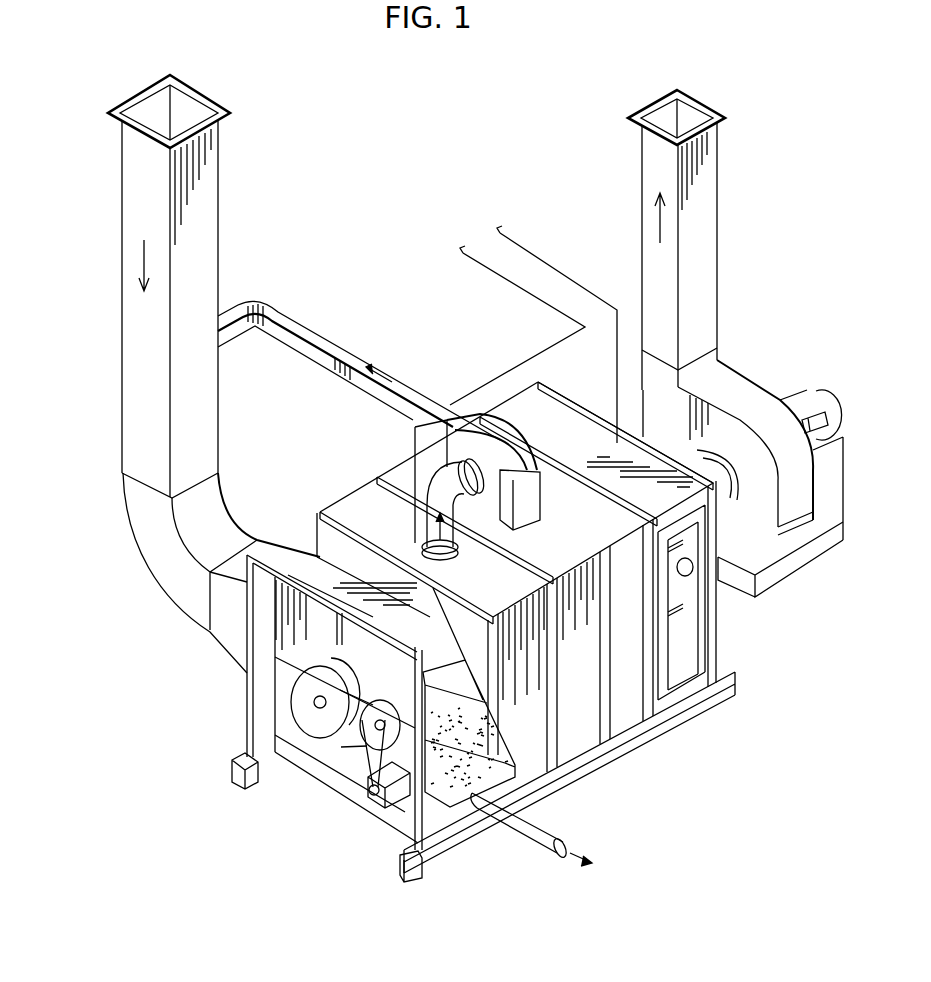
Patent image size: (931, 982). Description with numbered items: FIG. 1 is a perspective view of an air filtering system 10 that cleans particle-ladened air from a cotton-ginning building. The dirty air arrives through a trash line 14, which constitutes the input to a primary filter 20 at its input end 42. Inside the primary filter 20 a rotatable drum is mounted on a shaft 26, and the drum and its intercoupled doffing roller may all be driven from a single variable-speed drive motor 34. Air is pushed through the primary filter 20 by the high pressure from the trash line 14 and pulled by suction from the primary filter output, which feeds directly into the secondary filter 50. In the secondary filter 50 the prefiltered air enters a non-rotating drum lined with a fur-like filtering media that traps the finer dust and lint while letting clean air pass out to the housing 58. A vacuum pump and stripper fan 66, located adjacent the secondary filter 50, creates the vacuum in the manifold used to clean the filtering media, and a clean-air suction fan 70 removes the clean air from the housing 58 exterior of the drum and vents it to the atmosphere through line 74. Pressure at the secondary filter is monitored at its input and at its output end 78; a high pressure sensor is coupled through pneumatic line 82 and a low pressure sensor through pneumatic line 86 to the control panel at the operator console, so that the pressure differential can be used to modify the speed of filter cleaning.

The air filtering system 10 is at (285, 860).
The trash line 14 is at (205, 202).
The primary filter 20 is at (306, 538).
The shaft 26 is at (316, 705).
The variable-speed drive motor 34 is at (360, 775).
The input end 42 is at (247, 662).
The secondary filter 50 is at (638, 730).
The housing 58 is at (573, 740).
The vacuum pump and stripper fan 66 is at (466, 432).
The suction fan 70 is at (752, 390).
The line 74 is at (705, 225).
The output end 78 is at (720, 630).
The pneumatic line 82 is at (517, 290).
The pneumatic line 86 is at (566, 274).